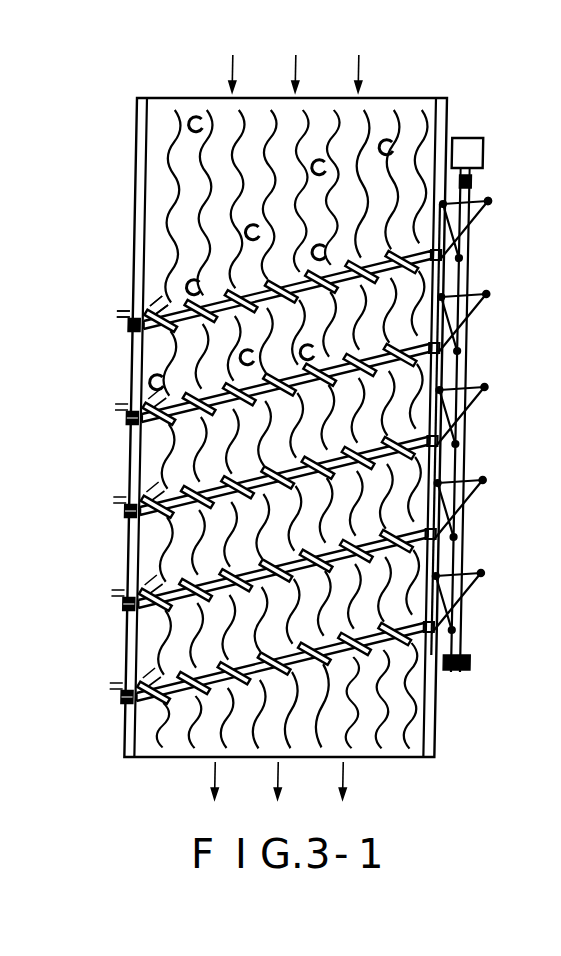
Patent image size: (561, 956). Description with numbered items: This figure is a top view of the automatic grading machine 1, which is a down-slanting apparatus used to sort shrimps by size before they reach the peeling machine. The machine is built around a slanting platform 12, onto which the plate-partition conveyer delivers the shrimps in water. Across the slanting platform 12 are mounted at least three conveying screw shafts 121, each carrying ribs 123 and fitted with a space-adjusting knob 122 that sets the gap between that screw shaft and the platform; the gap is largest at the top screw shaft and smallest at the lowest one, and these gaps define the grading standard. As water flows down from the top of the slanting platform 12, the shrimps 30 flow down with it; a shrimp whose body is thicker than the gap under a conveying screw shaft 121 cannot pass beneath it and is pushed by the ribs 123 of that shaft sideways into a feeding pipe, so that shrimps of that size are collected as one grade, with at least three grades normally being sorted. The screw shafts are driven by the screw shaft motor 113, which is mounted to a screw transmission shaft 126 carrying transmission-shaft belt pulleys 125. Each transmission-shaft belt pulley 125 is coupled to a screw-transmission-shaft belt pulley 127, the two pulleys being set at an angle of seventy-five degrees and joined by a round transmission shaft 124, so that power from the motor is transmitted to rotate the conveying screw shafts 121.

The automatic grading machine 1 is at (137, 172).
The slanting platform 12 is at (196, 100).
The shrimps 30 is at (387, 144).
The screw shaft motor 113 is at (470, 138).
The conveying screw shaft 121 is at (162, 305).
The space-adjusting knob 122 is at (133, 333).
The ribs 123 is at (425, 655).
The round transmission shaft 124 is at (477, 222).
The transmission-shaft belt pulley 125 is at (492, 200).
The screw transmission shaft 126 is at (470, 340).
The screw-transmission-shaft belt pulley 127 is at (468, 643).